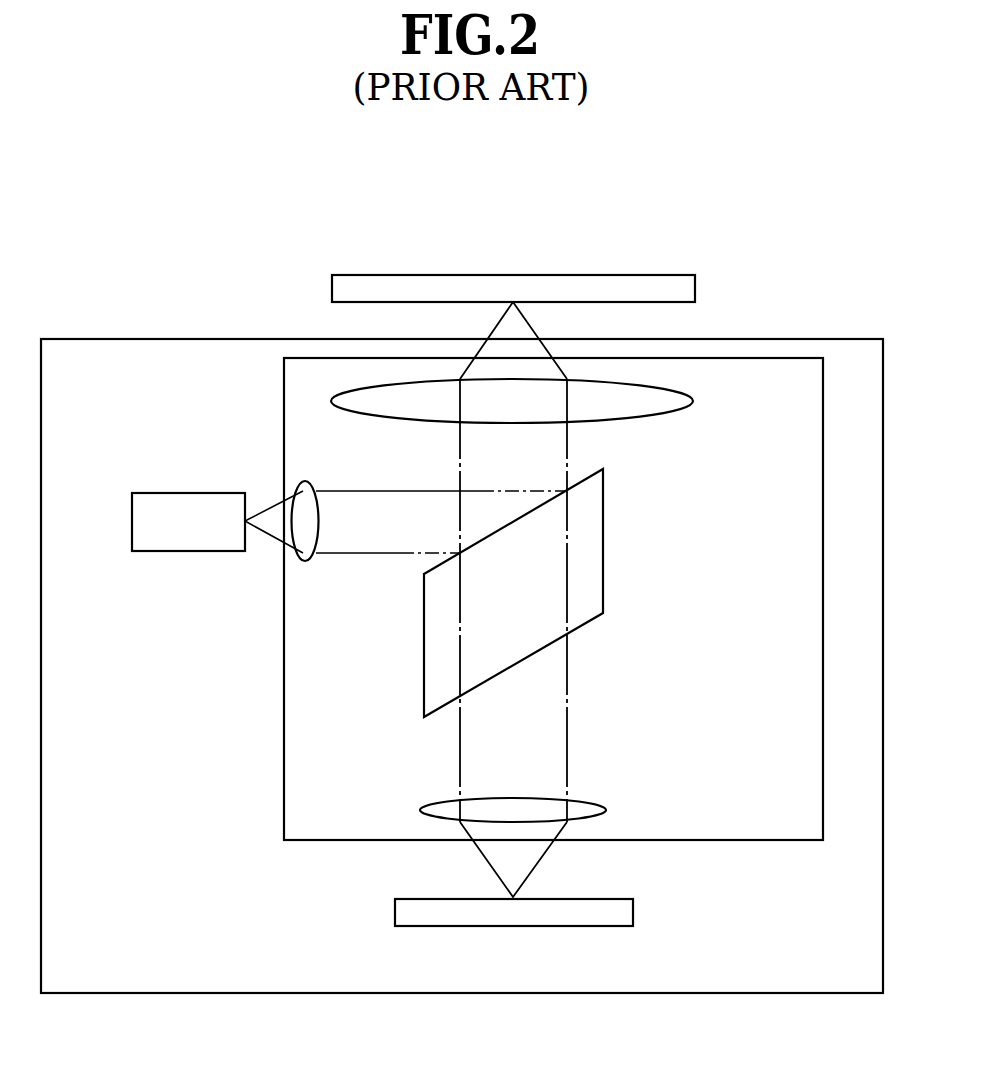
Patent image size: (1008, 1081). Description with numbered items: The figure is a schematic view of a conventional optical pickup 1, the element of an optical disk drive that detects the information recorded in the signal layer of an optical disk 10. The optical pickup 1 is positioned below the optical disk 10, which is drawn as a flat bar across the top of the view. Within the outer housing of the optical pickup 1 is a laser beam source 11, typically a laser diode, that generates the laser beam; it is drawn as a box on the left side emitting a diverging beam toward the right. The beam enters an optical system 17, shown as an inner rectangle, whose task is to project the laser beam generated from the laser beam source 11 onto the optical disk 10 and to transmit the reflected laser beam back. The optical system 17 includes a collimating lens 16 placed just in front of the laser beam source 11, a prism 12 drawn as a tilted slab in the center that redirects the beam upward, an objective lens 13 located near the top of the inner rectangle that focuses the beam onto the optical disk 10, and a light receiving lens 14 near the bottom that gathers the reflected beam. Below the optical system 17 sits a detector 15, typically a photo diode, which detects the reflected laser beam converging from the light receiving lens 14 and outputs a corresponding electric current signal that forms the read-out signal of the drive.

The optical pickup 1 is at (60, 338).
The optical disk 10 is at (695, 290).
The laser beam source 11 is at (193, 540).
The prism 12 is at (597, 550).
The objective lens 13 is at (693, 400).
The light receiving lens 14 is at (600, 808).
The detector 15 is at (617, 903).
The collimating lens 16 is at (307, 561).
The optical system 17 is at (283, 722).